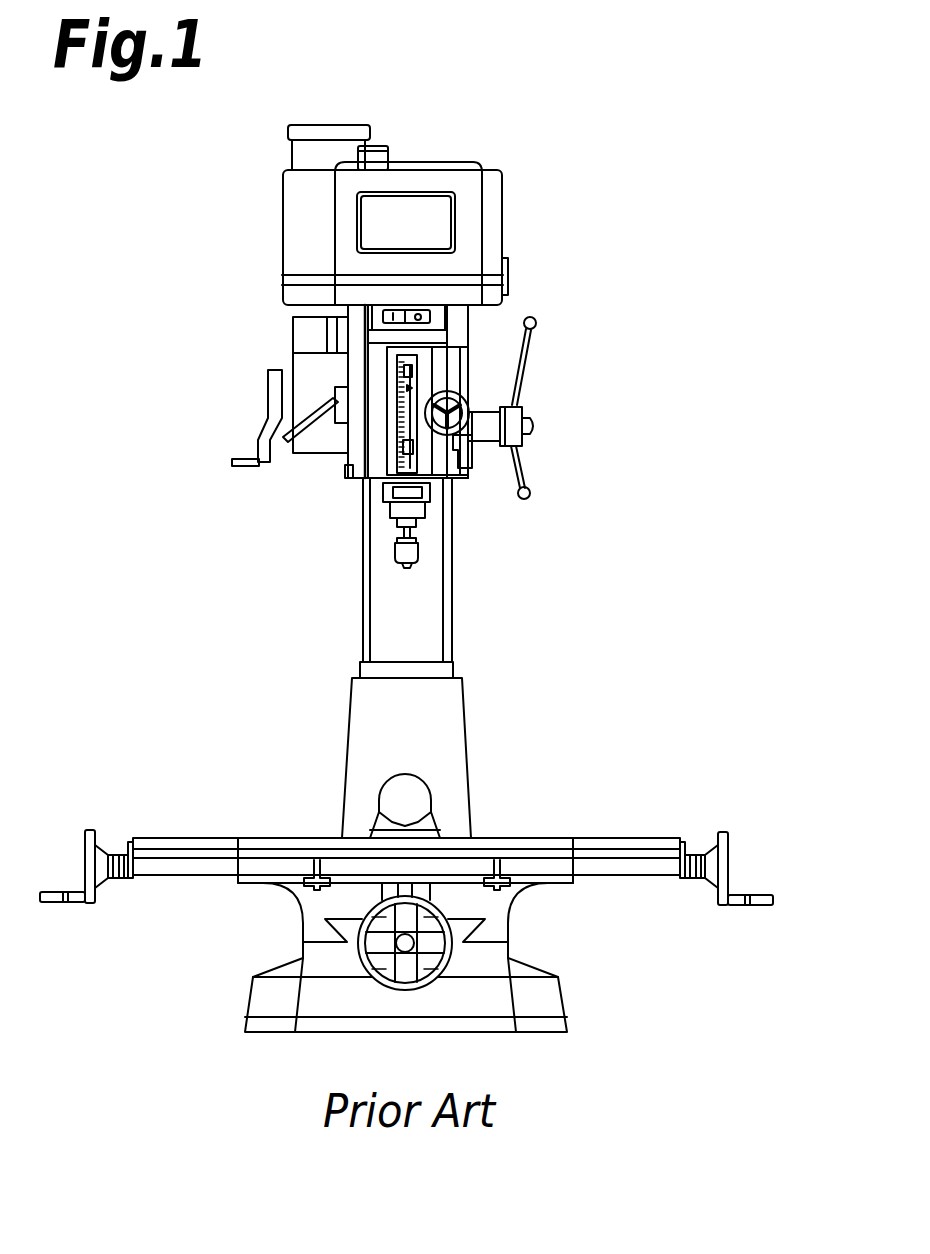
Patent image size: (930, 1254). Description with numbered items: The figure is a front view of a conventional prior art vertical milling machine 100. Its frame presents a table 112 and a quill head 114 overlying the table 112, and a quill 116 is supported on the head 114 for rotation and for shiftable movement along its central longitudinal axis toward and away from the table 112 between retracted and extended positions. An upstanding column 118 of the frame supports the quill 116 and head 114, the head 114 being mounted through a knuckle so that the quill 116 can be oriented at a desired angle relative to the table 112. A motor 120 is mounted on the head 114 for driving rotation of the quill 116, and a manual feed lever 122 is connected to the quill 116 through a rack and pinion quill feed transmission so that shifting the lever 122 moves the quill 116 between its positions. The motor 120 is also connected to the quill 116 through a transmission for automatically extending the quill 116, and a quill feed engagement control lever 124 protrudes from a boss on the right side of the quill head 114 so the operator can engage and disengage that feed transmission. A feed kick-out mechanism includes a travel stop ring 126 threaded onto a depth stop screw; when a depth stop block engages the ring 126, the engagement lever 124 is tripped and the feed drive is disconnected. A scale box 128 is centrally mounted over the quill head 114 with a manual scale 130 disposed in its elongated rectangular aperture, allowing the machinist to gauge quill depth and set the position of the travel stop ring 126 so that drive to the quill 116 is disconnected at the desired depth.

The vertical milling machine 100 is at (513, 105).
The table 112 is at (167, 876).
The quill head 114 is at (368, 318).
The quill 116 is at (393, 520).
The column 118 is at (367, 592).
The motor 120 is at (502, 203).
The manual feed lever 122 is at (536, 326).
The quill feed engagement control lever 124 is at (460, 443).
The travel stop ring 126 is at (385, 490).
The scale box 128 is at (385, 412).
The manual scale 130 is at (405, 447).